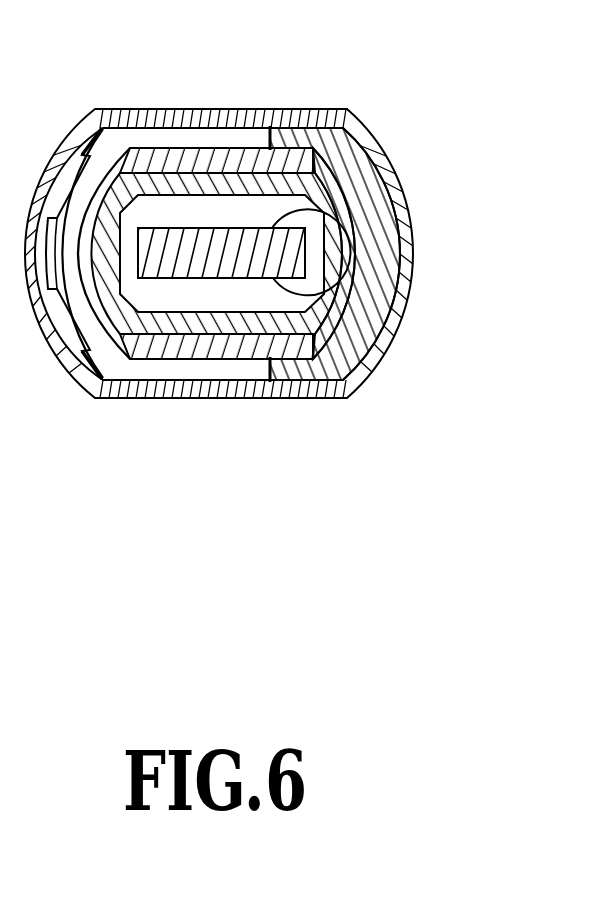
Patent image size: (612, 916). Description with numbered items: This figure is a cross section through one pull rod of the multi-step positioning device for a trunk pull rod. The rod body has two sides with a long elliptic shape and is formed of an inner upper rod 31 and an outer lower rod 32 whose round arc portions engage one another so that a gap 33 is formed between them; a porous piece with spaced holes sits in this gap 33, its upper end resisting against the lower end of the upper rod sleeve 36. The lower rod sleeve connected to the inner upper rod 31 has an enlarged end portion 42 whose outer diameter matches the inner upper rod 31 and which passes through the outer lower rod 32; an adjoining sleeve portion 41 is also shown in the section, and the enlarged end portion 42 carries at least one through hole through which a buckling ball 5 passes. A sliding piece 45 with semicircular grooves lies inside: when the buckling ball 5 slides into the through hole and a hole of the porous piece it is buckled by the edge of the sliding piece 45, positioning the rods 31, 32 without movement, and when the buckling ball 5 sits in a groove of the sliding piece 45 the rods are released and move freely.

The buckling ball 5 is at (308, 285).
The inner upper rod 31 is at (345, 192).
The outer lower rod 32 is at (405, 218).
The gap 33 is at (223, 384).
The upper rod sleeve 36 is at (370, 325).
The inner shell top portion 41 is at (152, 181).
The enlarged end portion 42 is at (163, 383).
The sliding piece 45 is at (251, 234).